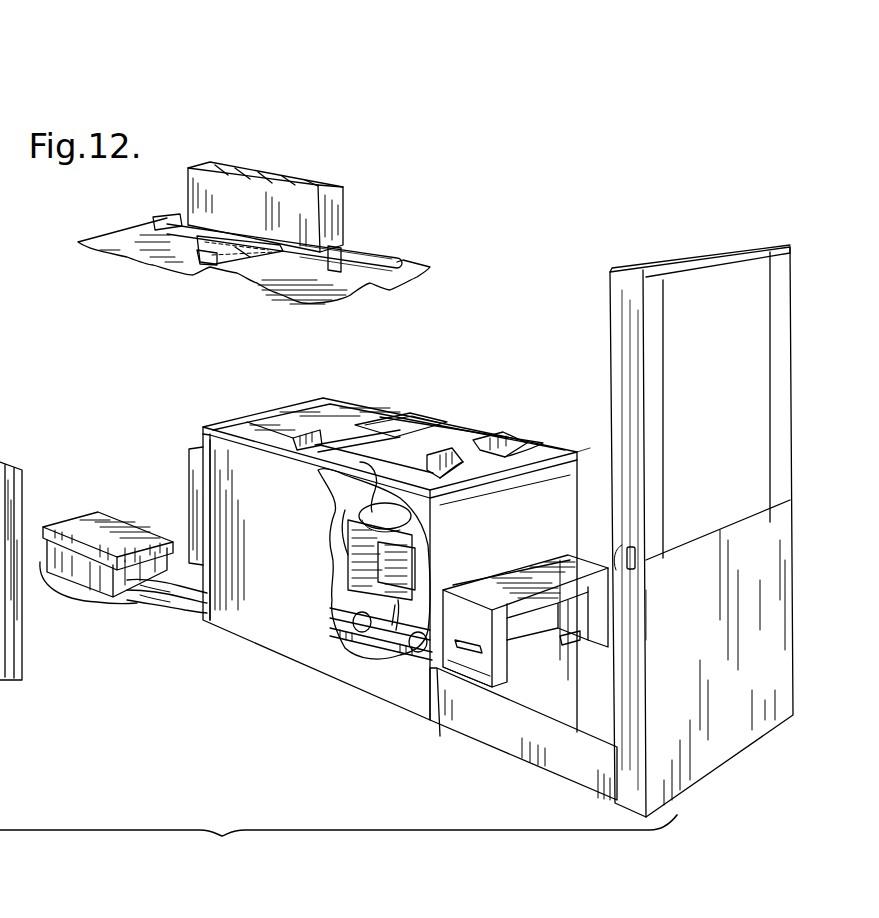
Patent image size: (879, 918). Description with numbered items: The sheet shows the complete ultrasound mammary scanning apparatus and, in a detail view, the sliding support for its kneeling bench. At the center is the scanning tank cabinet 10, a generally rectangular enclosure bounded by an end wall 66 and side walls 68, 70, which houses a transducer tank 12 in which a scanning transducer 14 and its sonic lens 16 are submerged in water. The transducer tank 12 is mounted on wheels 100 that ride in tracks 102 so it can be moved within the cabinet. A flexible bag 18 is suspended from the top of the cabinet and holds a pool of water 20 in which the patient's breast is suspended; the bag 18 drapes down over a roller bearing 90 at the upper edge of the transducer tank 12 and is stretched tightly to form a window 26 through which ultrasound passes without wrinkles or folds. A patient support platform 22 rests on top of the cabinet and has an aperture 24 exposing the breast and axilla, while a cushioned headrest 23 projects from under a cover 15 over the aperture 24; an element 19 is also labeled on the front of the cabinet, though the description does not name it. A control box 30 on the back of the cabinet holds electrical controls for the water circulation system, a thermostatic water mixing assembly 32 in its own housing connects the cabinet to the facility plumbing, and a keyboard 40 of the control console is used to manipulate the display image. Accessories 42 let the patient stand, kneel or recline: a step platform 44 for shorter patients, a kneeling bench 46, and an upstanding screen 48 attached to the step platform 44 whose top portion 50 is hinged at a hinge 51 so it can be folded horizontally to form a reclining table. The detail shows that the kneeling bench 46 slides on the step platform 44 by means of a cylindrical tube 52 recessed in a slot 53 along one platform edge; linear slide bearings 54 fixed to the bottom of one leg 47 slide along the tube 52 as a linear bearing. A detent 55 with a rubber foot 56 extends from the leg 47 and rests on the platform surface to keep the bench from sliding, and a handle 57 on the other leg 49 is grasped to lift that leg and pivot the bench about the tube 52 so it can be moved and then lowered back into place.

In FIG. 1, the scanning tank cabinet 10 is at (216, 632).
In FIG. 1, the transducer tank 12 is at (338, 566).
In FIG. 1, the scanning transducer 14 is at (380, 630).
In FIG. 1, the cover 15 is at (295, 407).
In FIG. 1, the sonic lens 16 is at (420, 524).
In FIG. 1, the flexible bag 18 is at (340, 478).
In FIG. 1, the side wall 19 is at (208, 473).
In FIG. 1, the pool of water 20 is at (360, 448).
In FIG. 1, the patient support platform 22 is at (491, 400).
In FIG. 1, the cushioned headrest 23 is at (395, 417).
In FIG. 1, the aperture 24 is at (441, 424).
In FIG. 1, the window 26 is at (348, 540).
In FIG. 1, the control box 30 is at (190, 446).
In FIG. 1, the thermostatic water mixing assembly 32 is at (92, 515).
In FIG. 1, the keyboard 40 is at (0, 440).
In FIG. 1, the accessories 42 is at (594, 345).
In FIG. 12, the step platform 44 is at (398, 286).
In FIG. 1, the step platform 44 is at (518, 748).
In FIG. 1, the kneeling bench 46 is at (533, 575).
In FIG. 12, the leg 47 is at (273, 180).
In FIG. 1, the leg 47 is at (598, 613).
In FIG. 1, the upstanding screen 48 is at (695, 515).
In FIG. 1, the other leg 49 is at (505, 658).
In FIG. 1, the top portion 50 is at (688, 268).
In FIG. 1, the hinge 51 is at (630, 535).
In FIG. 12, the cylindrical tube 52 is at (355, 258).
In FIG. 12, the slot 53 is at (163, 220).
In FIG. 12, the linear slide bearings 54 is at (342, 258).
In FIG. 12, the detent 55 is at (245, 268).
In FIG. 1, the detent 55 is at (568, 643).
In FIG. 12, the rubber foot 56 is at (208, 270).
In FIG. 1, the handle 57 is at (478, 653).
In FIG. 1, the end wall 66 is at (553, 470).
In FIG. 1, the side wall 68 is at (208, 513).
In FIG. 1, the side wall 70 is at (364, 385).
In FIG. 1, the roller bearing 90 is at (340, 503).
In FIG. 1, the wheels 100 is at (355, 628).
In FIG. 1, the tracks 102 is at (345, 598).